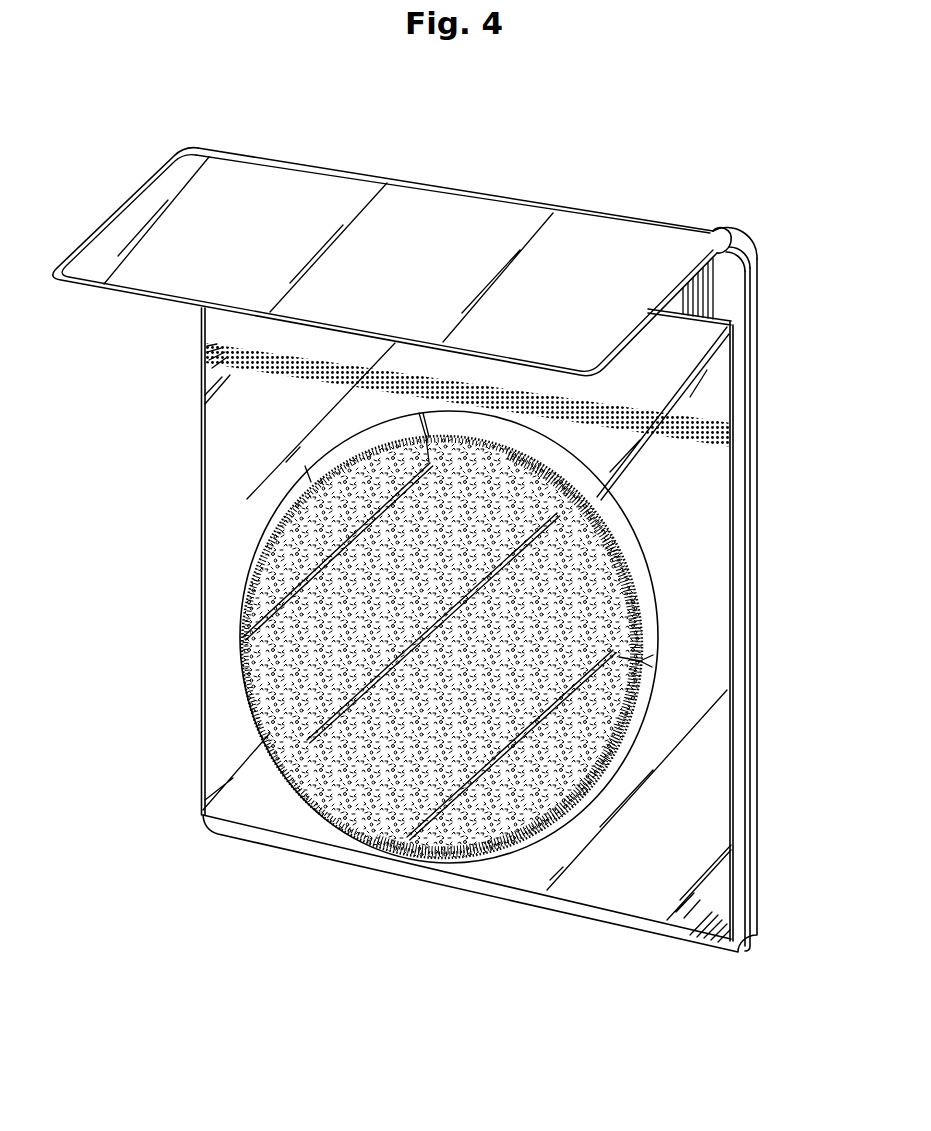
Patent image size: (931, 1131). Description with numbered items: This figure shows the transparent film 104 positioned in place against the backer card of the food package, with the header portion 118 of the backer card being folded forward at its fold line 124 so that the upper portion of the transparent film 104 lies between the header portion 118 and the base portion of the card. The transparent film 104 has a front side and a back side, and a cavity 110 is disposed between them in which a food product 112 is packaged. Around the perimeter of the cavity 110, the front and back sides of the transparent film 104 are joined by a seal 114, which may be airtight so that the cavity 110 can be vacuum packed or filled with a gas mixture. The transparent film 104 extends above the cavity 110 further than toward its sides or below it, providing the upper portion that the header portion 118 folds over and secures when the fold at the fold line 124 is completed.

The transparent film 104 is at (684, 546).
The cavity 110 is at (633, 748).
The food product 112 is at (420, 848).
The seal 114 is at (707, 616).
The header portion 118 is at (407, 296).
The fold line 124 is at (633, 217).